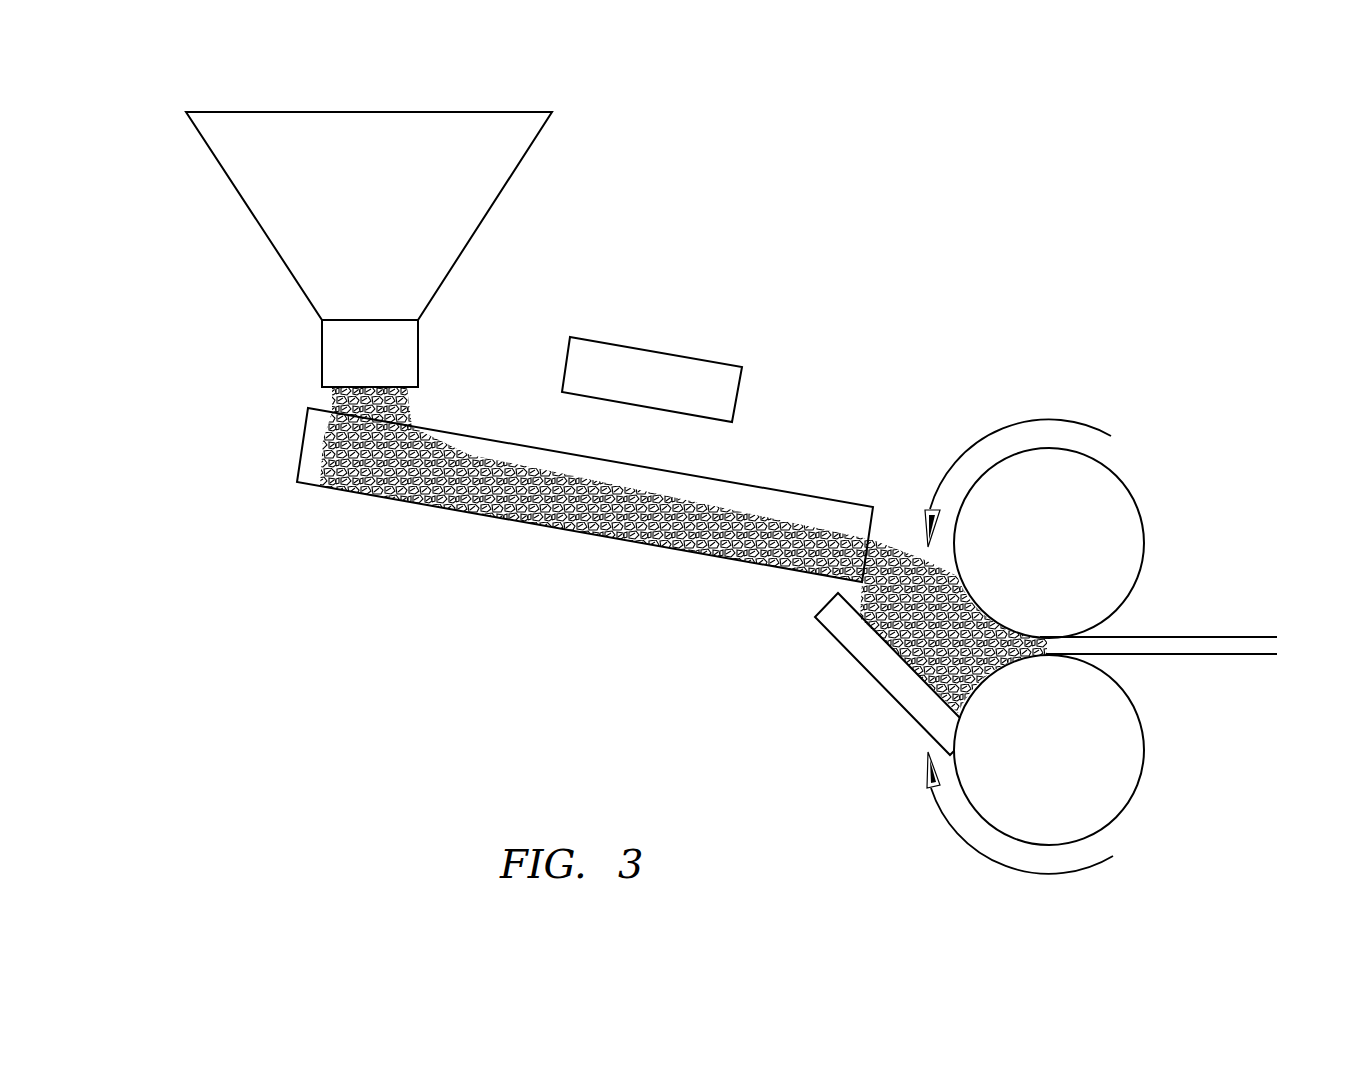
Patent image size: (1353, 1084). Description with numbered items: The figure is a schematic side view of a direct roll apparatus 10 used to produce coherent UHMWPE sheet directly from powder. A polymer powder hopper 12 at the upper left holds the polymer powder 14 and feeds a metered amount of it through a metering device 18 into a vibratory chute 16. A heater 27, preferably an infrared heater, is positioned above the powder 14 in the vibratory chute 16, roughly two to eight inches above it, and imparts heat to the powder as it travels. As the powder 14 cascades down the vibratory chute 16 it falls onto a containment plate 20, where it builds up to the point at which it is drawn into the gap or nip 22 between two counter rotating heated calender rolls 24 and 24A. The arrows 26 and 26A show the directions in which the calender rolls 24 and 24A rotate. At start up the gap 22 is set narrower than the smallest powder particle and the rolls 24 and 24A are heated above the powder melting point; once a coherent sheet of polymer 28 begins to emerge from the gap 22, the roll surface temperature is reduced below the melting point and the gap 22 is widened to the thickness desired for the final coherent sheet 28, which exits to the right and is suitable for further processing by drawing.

The direct roll apparatus 10 is at (793, 290).
The polymer powder hopper 12 is at (492, 167).
The polymer powder 14 is at (470, 463).
The vibratory chute 16 is at (310, 473).
The metering device 18 is at (337, 357).
The containment plate 20 is at (872, 657).
The gap or nip 22 is at (1058, 648).
The heated calender roll 24 is at (1066, 558).
The heated calender roll 24A is at (1076, 767).
The arrow 26 is at (988, 438).
The arrow 26A is at (1038, 875).
The heater 27 is at (648, 362).
The coherent sheet of polymer 28 is at (1190, 645).